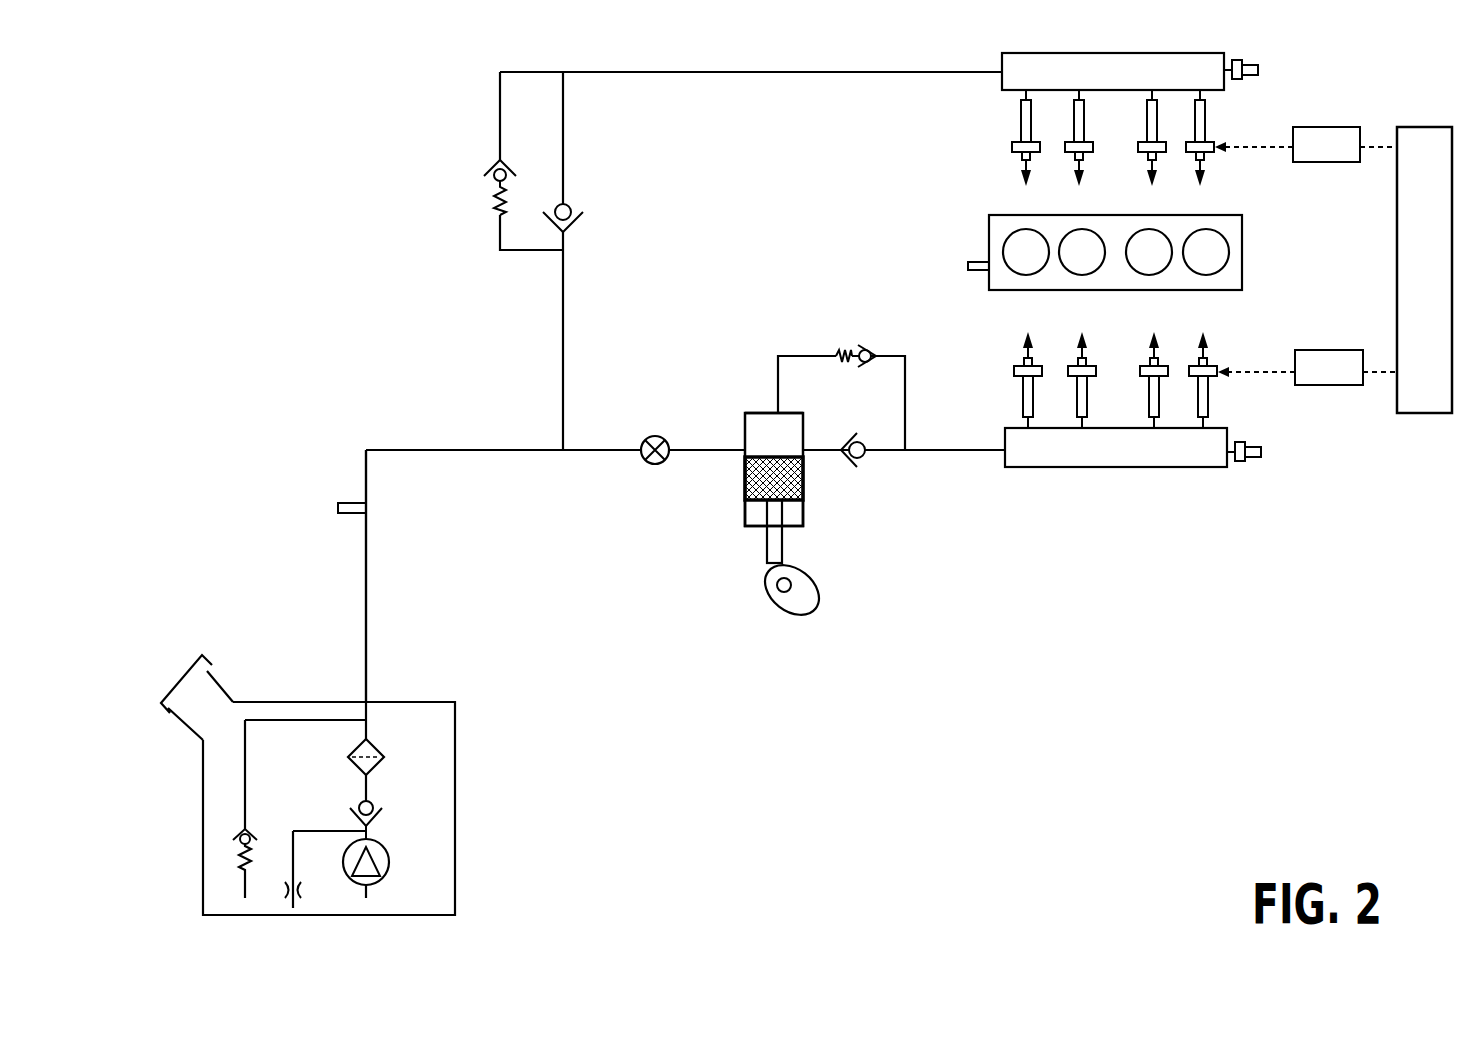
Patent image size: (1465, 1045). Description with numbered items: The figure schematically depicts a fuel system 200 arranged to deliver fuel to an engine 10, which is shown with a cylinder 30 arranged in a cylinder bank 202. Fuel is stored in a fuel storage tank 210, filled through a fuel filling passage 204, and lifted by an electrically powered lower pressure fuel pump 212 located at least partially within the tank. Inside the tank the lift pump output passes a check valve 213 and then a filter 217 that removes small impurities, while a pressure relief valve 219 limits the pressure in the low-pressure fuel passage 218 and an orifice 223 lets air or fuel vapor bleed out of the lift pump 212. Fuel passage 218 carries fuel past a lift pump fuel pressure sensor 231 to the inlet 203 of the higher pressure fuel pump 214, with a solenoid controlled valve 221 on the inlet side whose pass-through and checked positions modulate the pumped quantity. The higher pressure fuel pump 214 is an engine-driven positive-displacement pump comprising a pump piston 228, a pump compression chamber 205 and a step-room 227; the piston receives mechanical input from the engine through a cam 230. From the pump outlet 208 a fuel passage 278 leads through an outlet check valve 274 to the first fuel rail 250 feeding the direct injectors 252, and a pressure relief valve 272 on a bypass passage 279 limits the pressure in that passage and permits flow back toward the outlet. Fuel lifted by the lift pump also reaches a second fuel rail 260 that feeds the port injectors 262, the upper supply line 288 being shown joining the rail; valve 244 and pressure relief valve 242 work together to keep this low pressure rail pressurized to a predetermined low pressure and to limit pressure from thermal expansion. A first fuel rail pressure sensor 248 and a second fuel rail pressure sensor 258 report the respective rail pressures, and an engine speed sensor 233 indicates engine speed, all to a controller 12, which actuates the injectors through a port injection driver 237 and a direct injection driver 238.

The fuel system 200 is at (152, 100).
The engine 10 is at (938, 172).
The controller 12 is at (1436, 284).
The cylinder 30 is at (1037, 264).
The cylinder bank 202 is at (1243, 258).
The inlet 203 is at (744, 449).
The fuel filling passage 204 is at (220, 684).
The pump compression chamber 205 is at (787, 437).
The outlet 208 is at (812, 449).
The fuel storage tank 210 is at (455, 830).
The lower pressure fuel pump 212 is at (388, 871).
The check valve 213 is at (376, 803).
The higher pressure fuel pump 214 is at (762, 413).
The filter 217 is at (378, 751).
The fuel passage 218 is at (368, 663).
The pressure relief valve 219 is at (236, 864).
The solenoid controlled valve 221 is at (647, 438).
The orifice 223 is at (284, 891).
The step-room 227 is at (755, 527).
The pump piston 228 is at (790, 503).
The cam 230 is at (815, 607).
The lift pump fuel pressure sensor 231 is at (358, 504).
The engine speed sensor 233 is at (982, 262).
The port injection driver 237 is at (1344, 156).
The direct injection driver 238 is at (1346, 381).
The pressure relief valve 242 is at (490, 158).
The valve 244 is at (570, 203).
The first fuel rail pressure sensor 248 is at (1262, 452).
The first fuel rail 250 is at (1216, 428).
The direct injectors 252 is at (1090, 366).
The second fuel rail pressure sensor 258 is at (1260, 70).
The second fuel rail 260 is at (1213, 92).
The port injectors 262 is at (1087, 152).
The pressure relief valve 272 is at (845, 352).
The check valve 274 is at (847, 437).
The fuel passage 278 is at (935, 448).
The bypass passage 279 is at (800, 356).
The fuel passage to direct injection rail 288 is at (702, 72).